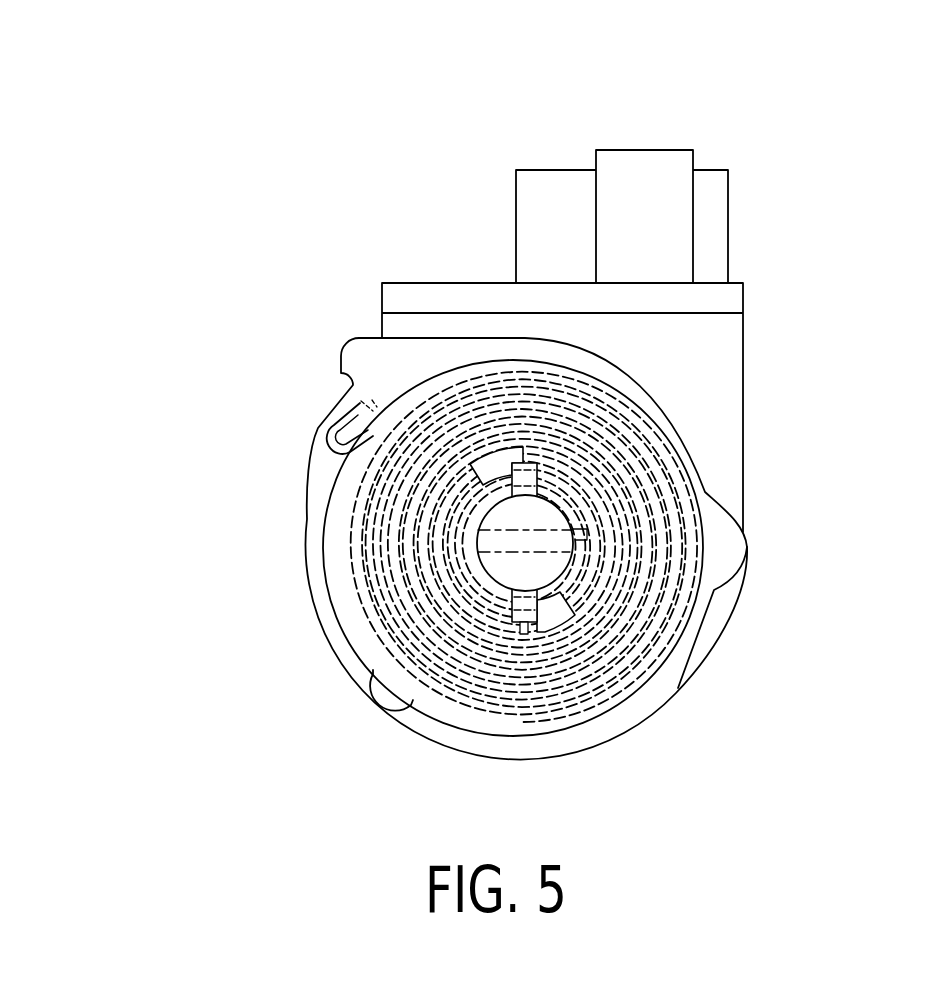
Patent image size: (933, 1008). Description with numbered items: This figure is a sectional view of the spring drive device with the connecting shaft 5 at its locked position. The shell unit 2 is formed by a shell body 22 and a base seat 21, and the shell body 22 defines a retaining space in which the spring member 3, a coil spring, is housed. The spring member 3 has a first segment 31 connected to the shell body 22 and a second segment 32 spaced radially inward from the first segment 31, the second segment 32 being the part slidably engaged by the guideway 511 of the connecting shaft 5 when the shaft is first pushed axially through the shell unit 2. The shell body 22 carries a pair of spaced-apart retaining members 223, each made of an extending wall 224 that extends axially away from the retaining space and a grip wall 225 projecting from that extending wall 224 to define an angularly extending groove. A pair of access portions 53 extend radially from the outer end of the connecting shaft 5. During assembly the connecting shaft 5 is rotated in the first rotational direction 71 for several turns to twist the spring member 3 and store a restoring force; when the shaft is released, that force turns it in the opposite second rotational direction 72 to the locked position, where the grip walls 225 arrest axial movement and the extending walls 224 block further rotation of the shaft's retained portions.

The shell unit 2 is at (782, 240).
The base seat 21 is at (766, 367).
The shell body 22 is at (299, 420).
The retaining members 223 is at (213, 480).
The extending wall 224 is at (470, 465).
The grip wall 225 is at (483, 485).
The spring member 3 is at (705, 553).
The first segment 31 is at (352, 414).
The second segment 32 is at (545, 535).
The connecting shaft 5 is at (565, 501).
The access portions 53 is at (512, 478).
The guideway 511 is at (497, 545).
The first rotational direction 71 is at (428, 127).
The second rotational direction 72 is at (613, 57).